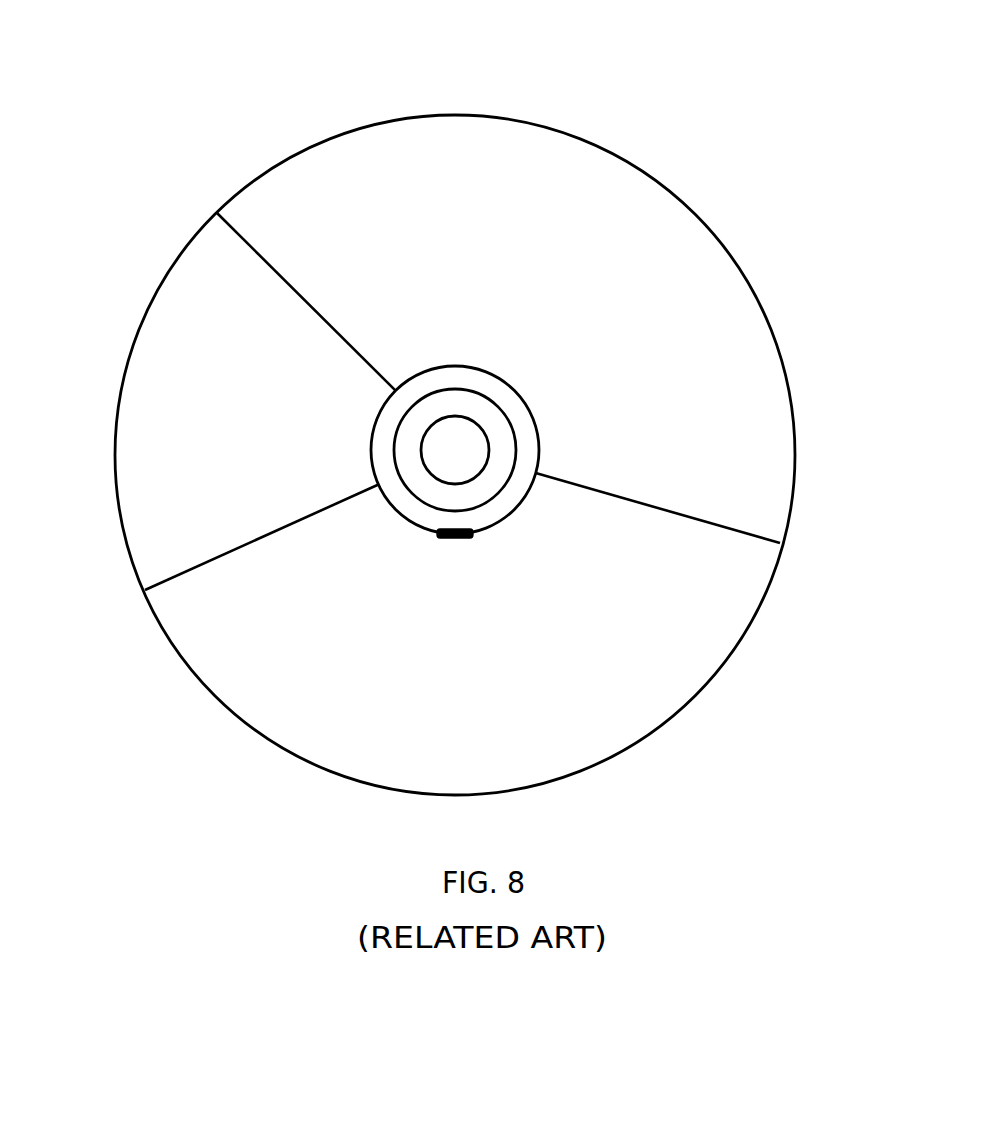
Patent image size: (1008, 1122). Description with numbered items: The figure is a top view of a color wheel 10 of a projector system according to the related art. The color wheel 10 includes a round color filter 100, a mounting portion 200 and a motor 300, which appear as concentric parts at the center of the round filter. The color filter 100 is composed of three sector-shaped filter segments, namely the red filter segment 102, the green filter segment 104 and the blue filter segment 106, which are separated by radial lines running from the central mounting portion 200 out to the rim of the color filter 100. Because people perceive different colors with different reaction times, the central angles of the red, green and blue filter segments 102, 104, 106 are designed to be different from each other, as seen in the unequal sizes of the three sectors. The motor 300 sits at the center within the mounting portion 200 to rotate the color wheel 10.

The color wheel 10 is at (672, 128).
The color filter 100 is at (728, 248).
The red filter segment 102 is at (657, 628).
The green filter segment 104 is at (418, 173).
The blue filter segment 106 is at (212, 323).
The mounting portion 200 is at (513, 380).
The motor 300 is at (472, 458).